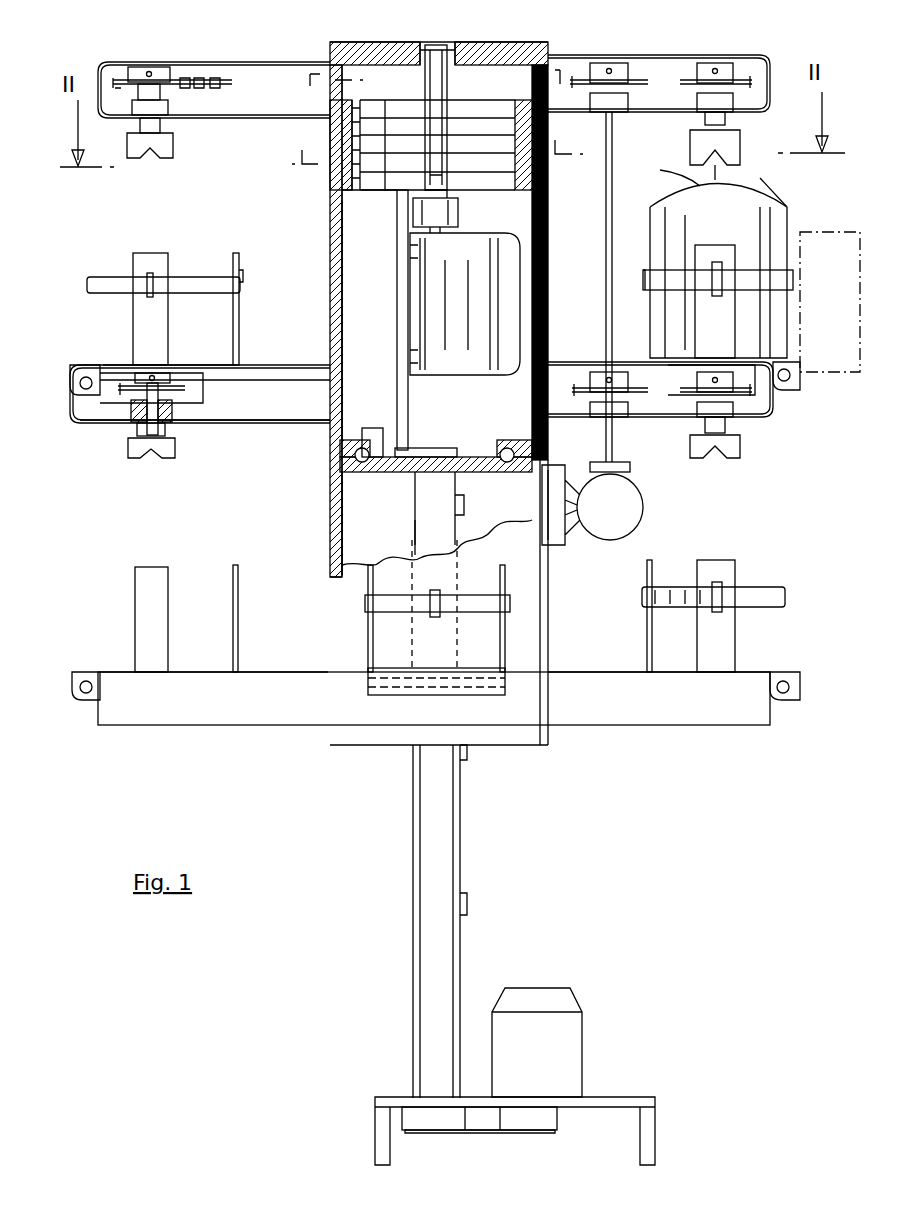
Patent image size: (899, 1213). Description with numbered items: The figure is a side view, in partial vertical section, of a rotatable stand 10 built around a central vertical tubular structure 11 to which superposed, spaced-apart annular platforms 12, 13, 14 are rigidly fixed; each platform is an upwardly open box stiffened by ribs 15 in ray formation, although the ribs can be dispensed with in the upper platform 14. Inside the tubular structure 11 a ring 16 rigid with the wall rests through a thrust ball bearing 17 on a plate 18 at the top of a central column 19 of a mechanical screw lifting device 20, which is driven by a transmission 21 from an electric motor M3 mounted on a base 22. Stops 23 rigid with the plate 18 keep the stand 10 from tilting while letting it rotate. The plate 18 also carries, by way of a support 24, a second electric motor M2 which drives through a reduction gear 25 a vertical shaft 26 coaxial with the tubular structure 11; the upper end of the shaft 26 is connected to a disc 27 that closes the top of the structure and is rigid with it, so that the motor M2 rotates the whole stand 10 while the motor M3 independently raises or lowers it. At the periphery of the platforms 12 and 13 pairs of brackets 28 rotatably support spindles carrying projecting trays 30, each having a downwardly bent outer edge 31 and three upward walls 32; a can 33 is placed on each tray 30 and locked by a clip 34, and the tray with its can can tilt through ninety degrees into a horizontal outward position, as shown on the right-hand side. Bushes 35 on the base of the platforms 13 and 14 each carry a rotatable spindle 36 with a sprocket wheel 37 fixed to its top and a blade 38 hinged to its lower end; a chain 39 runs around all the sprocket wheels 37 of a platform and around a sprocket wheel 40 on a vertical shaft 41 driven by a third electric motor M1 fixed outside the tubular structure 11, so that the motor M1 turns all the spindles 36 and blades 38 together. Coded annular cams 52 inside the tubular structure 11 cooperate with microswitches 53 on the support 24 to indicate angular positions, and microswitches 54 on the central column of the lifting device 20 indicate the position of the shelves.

The rotatable stand 10 is at (316, 442).
The central vertical tubular structure 11 is at (330, 262).
The annular platform 12 is at (205, 713).
The annular platform 13 is at (232, 423).
The annular platform 14 is at (203, 118).
The ribs 15 is at (278, 385).
The ring 16 is at (331, 452).
The thrust ball bearing 17 is at (372, 465).
The plate 18 is at (480, 465).
The central column 19 is at (428, 512).
The mechanical screw lifting device 20 is at (405, 890).
The transmission 21 is at (505, 1120).
The base 22 is at (655, 1130).
The stops 23 is at (378, 440).
The support 24 is at (408, 305).
The reduction gear 25 is at (455, 208).
The vertical shaft 26 is at (440, 86).
The disc 27 is at (482, 52).
The brackets 28 is at (90, 395).
The tray 30 is at (182, 365).
The outer edge 31 is at (72, 378).
The walls 32 is at (145, 325).
The can 33 is at (760, 226).
The clip 34 is at (750, 282).
The bushes 35 is at (135, 412).
The rotatable spindle 36 is at (155, 422).
The sprocket wheel 37 is at (186, 388).
The blade 38 is at (168, 452).
The chain 39 is at (118, 67).
The sprocket wheel 40 is at (628, 78).
The vertical shaft 41 is at (607, 195).
The coded annular cams 52 is at (340, 150).
The microswitches 53 is at (372, 170).
The microswitches 54 is at (467, 750).
The electric motor M1 is at (640, 504).
The electric motor M2 is at (520, 308).
The electric motor M3 is at (565, 1047).